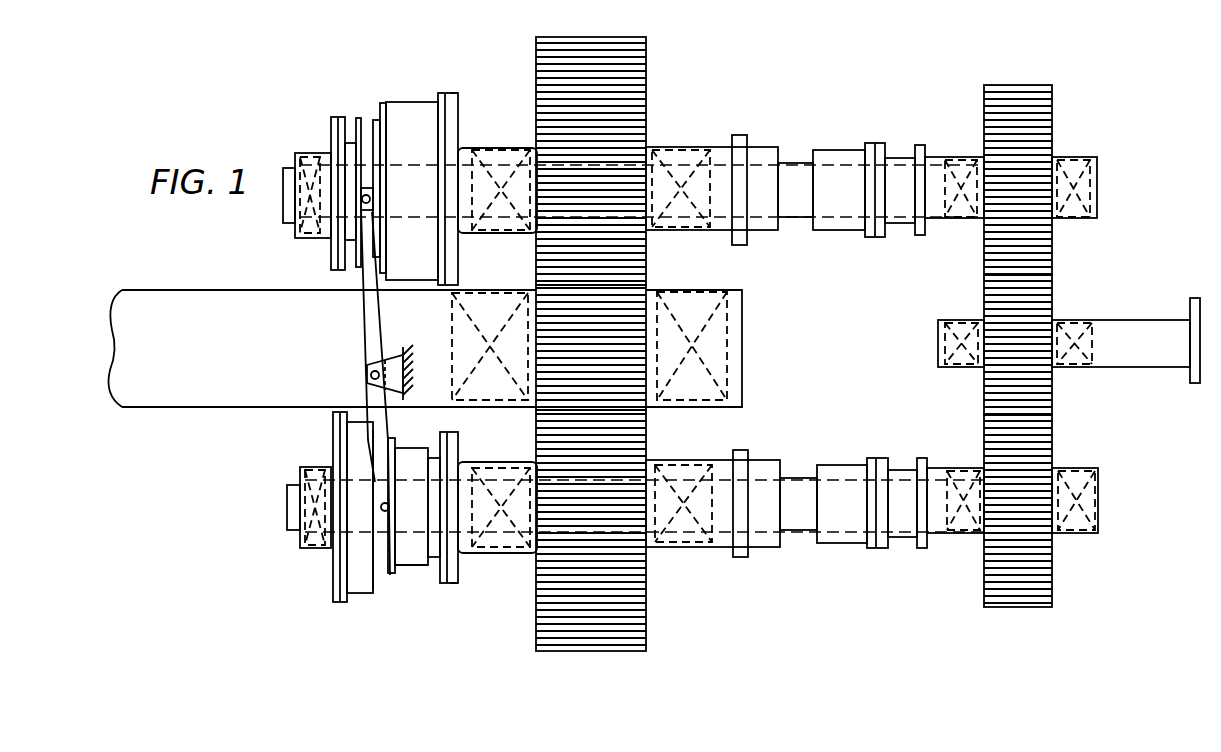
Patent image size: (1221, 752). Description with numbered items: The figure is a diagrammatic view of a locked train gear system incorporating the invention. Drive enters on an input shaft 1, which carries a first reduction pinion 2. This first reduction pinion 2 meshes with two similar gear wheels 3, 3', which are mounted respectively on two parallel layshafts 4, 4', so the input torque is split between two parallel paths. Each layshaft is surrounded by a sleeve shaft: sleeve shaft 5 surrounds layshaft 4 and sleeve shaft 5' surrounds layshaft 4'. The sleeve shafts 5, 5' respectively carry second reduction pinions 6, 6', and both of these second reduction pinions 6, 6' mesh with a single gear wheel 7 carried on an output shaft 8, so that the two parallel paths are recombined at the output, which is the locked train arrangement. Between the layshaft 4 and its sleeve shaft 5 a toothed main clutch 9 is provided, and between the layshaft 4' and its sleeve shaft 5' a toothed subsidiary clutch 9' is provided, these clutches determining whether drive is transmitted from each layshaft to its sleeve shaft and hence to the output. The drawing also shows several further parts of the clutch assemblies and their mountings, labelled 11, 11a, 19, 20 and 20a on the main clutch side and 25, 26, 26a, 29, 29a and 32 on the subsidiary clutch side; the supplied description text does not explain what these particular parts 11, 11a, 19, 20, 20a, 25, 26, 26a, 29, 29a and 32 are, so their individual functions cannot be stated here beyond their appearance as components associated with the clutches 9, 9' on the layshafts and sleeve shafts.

The input shaft 1 is at (1135, 350).
The first reduction pinion 2 is at (1045, 300).
The gear wheel 3 is at (1037, 180).
The gear wheel 3' is at (1043, 511).
The layshaft 4 is at (690, 180).
The layshaft 4' is at (692, 536).
The sleeve shaft 5 is at (781, 172).
The sleeve shaft 5' is at (783, 524).
The second reduction pinion 6 is at (610, 161).
The second reduction pinion 6' is at (617, 530).
The gear wheel 7 is at (640, 608).
The output shaft 8 is at (215, 300).
The toothed main clutch 9 is at (412, 167).
The toothed subsidiary clutch 9' is at (411, 593).
The flange 11 is at (352, 118).
The disc 11a is at (330, 126).
The flange 19 is at (388, 102).
The flange 20 is at (446, 93).
The flange face 20a is at (463, 100).
The hub 25 is at (363, 594).
The flange 26 is at (345, 603).
The disc 26a is at (333, 576).
The flange 29 is at (446, 585).
The flange face 29a is at (458, 586).
The hub 32 is at (408, 447).